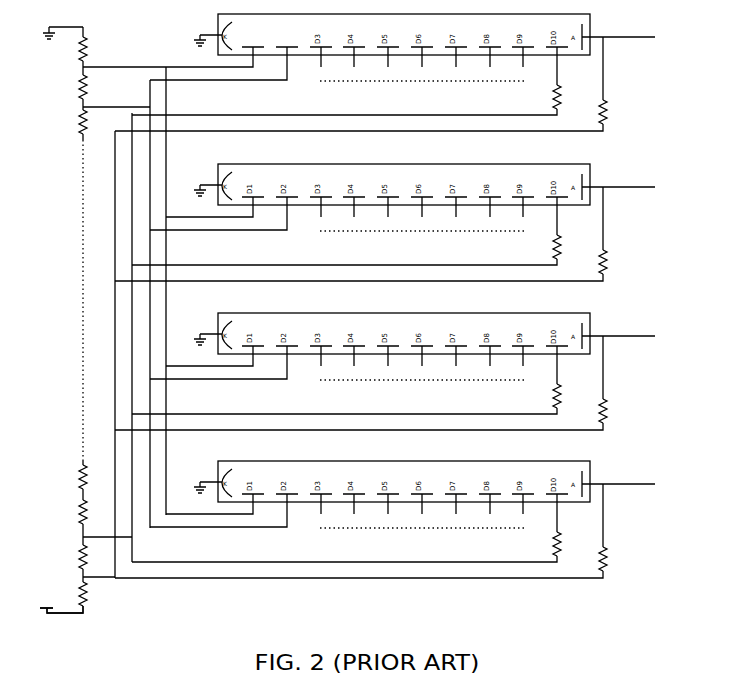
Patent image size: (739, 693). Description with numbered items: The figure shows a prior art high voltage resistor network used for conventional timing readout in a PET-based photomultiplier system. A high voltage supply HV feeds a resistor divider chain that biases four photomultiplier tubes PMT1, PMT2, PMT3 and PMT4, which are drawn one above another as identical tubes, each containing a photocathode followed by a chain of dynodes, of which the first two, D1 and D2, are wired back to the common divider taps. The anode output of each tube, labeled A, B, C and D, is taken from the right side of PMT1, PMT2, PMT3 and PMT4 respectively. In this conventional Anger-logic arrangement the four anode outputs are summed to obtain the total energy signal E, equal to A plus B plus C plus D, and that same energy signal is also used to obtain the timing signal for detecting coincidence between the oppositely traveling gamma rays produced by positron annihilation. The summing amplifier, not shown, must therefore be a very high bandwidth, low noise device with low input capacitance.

The photomultiplier tube PMT1 is at (391, 72).
The photomultiplier tube PMT2 is at (390, 222).
The photomultiplier tube PMT3 is at (390, 371).
The photomultiplier tube PMT4 is at (391, 519).
The dynode 1 D1 is at (215, 50).
The dynode 2 D2 is at (224, 57).
The high voltage HV is at (61, 604).